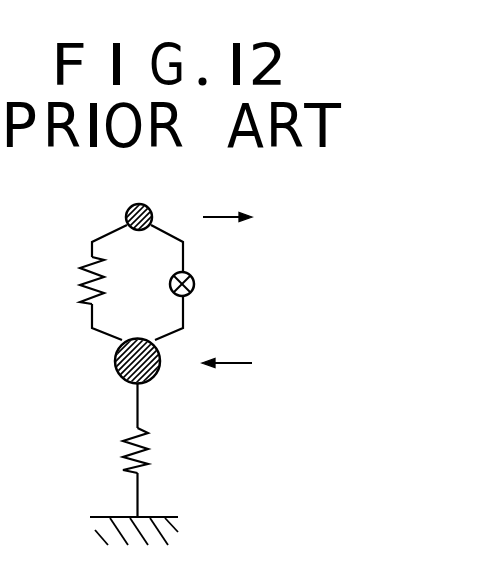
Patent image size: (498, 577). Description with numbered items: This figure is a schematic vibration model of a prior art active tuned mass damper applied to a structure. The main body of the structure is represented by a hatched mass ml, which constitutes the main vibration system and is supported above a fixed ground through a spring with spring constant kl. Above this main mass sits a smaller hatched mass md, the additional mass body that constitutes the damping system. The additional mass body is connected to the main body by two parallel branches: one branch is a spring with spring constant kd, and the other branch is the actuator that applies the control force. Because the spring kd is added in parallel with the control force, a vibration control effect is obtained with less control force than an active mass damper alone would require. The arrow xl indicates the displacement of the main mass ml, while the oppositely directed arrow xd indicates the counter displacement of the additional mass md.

The mass of additional mass body md is at (136, 200).
The spring constant of connecting spring kd is at (70, 280).
The counter displacement of additional mass xd is at (245, 215).
The mass of main body of structure ml is at (124, 361).
The displacement of main mass xl is at (227, 377).
The spring constant of main body kl is at (113, 450).